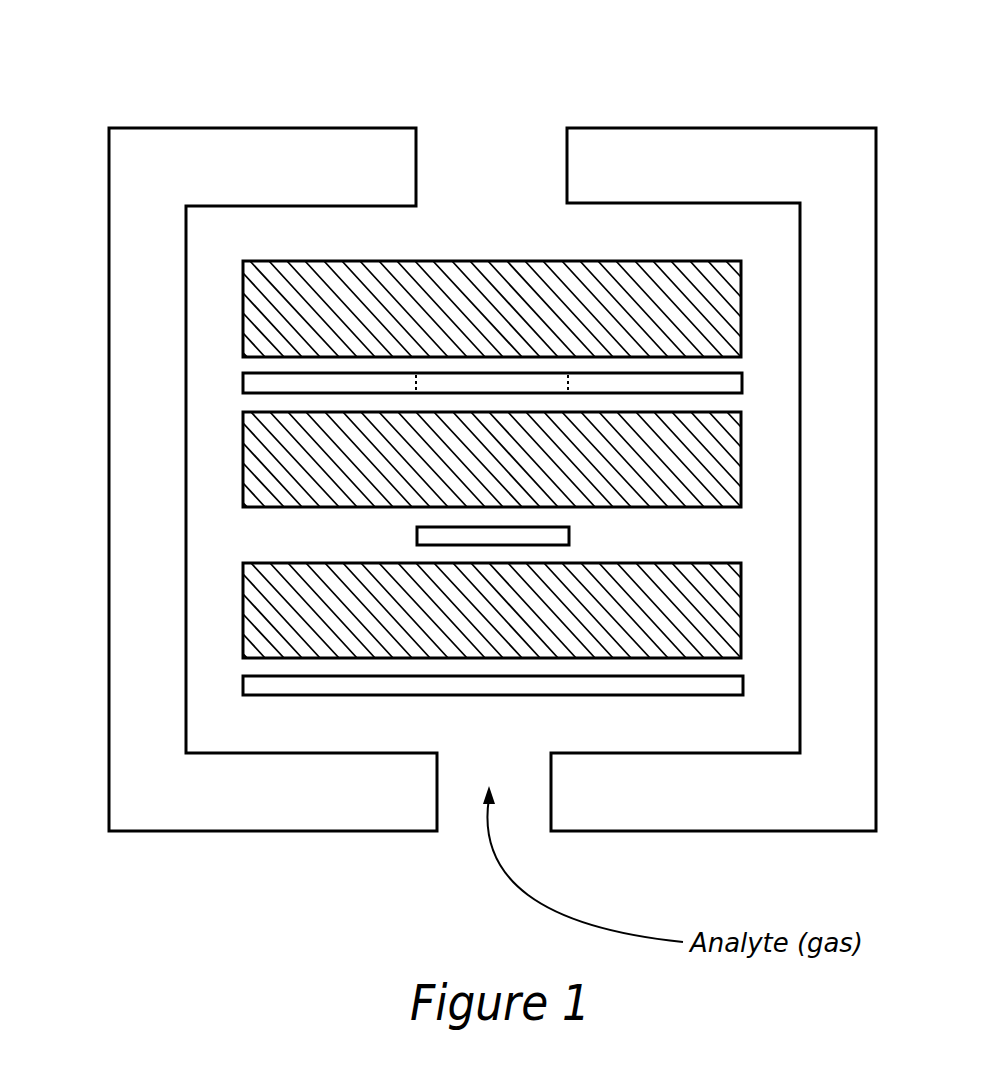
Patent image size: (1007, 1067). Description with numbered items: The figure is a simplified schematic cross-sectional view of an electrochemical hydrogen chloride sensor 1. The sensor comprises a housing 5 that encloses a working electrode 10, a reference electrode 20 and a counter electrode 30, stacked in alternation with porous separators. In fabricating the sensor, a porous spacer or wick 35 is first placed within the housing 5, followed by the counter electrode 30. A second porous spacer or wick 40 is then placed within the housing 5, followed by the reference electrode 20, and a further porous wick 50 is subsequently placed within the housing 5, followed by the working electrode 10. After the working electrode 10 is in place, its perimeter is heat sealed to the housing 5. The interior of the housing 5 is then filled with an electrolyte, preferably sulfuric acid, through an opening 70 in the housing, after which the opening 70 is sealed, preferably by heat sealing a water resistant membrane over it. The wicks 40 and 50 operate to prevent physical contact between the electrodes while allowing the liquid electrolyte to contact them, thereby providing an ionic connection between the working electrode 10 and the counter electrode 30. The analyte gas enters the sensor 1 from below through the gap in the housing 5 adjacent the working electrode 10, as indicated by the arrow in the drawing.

The electrochemical hydrogen chloride sensor 1 is at (285, 108).
The housing 5 is at (663, 148).
The working electrode 10 is at (667, 687).
The reference electrode 20 is at (562, 535).
The counter electrode 30 is at (730, 383).
The porous spacer or wick 35 is at (262, 272).
The porous spacer or wick 40 is at (270, 472).
The porous wick 50 is at (275, 612).
The opening 70 is at (488, 153).